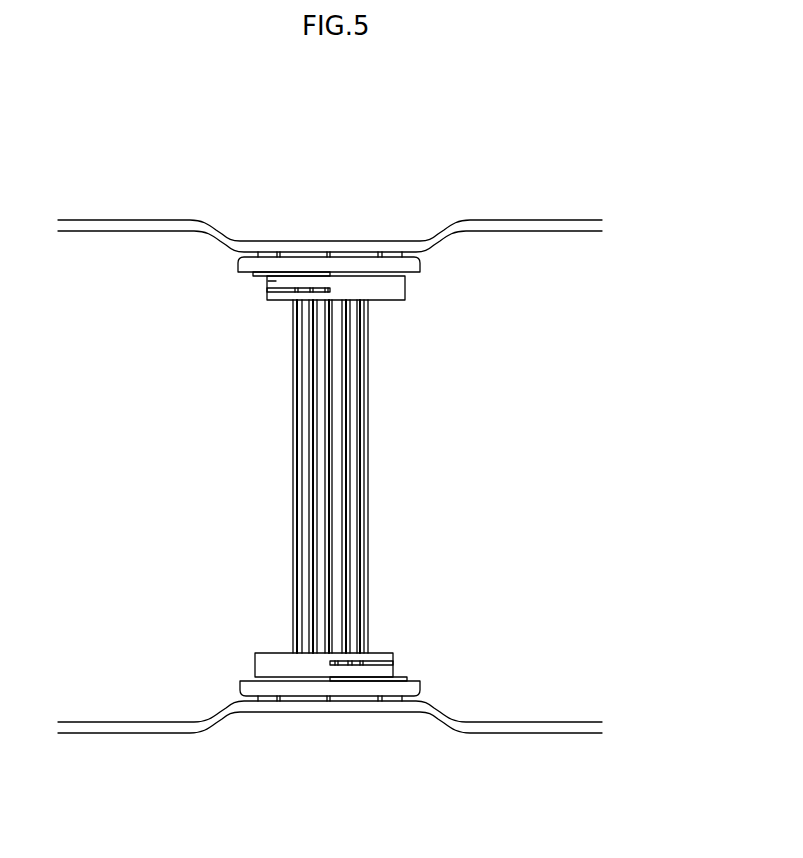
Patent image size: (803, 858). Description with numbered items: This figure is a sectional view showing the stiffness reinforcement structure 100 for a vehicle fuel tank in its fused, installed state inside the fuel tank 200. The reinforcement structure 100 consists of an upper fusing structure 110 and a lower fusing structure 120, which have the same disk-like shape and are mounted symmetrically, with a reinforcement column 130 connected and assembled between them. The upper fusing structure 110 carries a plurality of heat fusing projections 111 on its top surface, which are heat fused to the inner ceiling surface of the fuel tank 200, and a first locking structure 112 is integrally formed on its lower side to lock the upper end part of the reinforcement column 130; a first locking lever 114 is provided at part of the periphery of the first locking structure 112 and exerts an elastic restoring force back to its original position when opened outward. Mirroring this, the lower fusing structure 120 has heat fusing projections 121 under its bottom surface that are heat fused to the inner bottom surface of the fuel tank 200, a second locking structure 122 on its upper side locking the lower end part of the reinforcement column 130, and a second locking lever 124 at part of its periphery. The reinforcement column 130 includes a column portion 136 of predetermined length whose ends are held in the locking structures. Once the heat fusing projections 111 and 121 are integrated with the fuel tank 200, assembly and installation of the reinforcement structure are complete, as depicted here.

The stiffness reinforcement structure 100 is at (573, 292).
The upper fusing structure 110 is at (367, 258).
The heat fusing projections 111 is at (307, 257).
The first locking structure 112 is at (390, 296).
The first locking lever 114 is at (272, 281).
The lower fusing structure 120 is at (361, 683).
The heat fusing projections 121 is at (318, 698).
The second locking structure 122 is at (261, 664).
The second locking lever 124 is at (390, 667).
The reinforcement column 130 is at (376, 476).
The column portion 136 is at (305, 480).
The fuel tank 200 is at (514, 215).